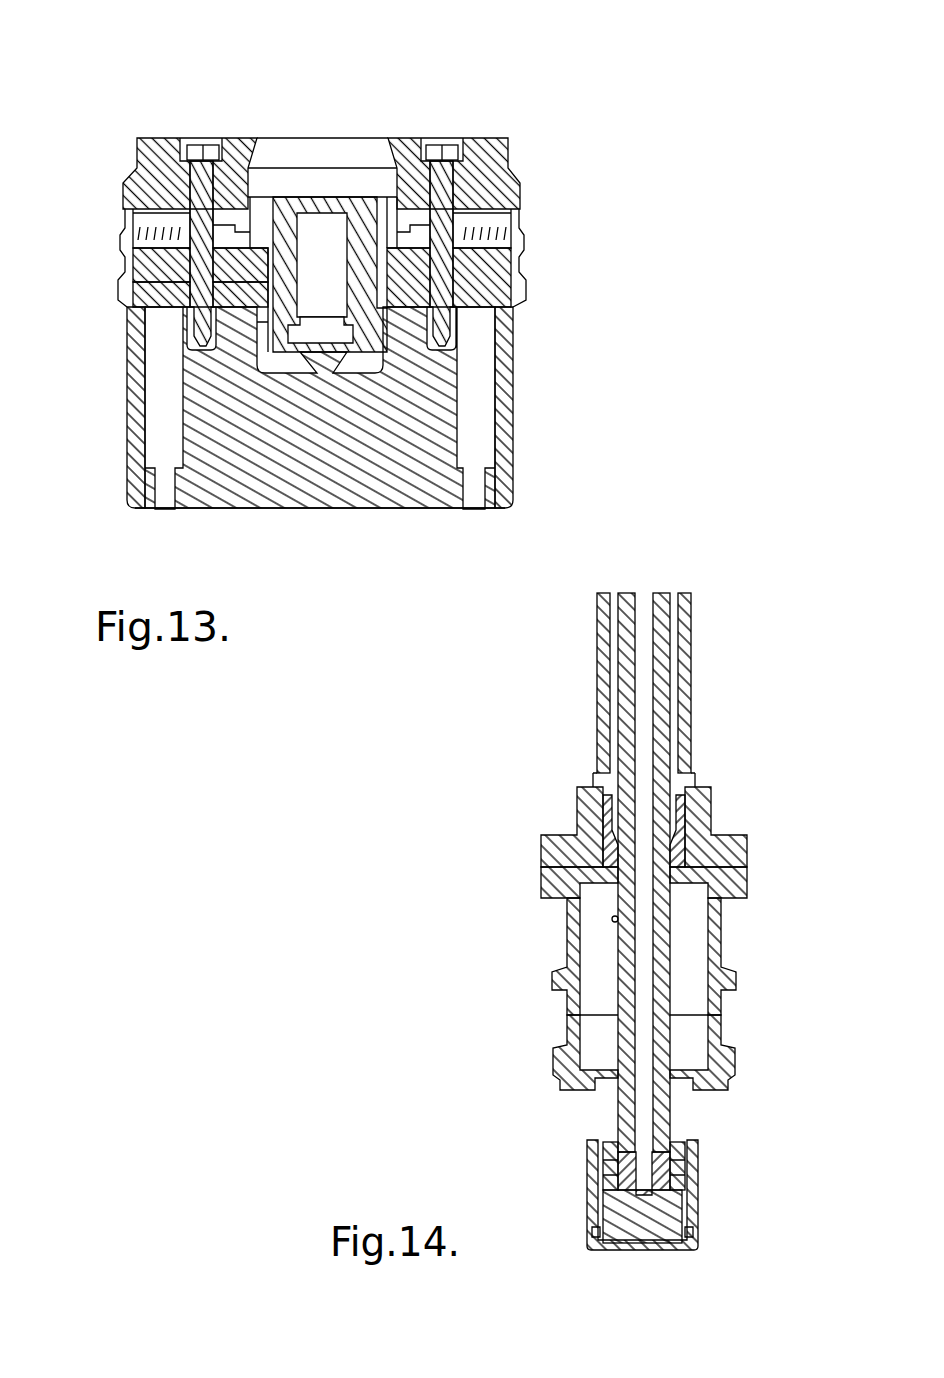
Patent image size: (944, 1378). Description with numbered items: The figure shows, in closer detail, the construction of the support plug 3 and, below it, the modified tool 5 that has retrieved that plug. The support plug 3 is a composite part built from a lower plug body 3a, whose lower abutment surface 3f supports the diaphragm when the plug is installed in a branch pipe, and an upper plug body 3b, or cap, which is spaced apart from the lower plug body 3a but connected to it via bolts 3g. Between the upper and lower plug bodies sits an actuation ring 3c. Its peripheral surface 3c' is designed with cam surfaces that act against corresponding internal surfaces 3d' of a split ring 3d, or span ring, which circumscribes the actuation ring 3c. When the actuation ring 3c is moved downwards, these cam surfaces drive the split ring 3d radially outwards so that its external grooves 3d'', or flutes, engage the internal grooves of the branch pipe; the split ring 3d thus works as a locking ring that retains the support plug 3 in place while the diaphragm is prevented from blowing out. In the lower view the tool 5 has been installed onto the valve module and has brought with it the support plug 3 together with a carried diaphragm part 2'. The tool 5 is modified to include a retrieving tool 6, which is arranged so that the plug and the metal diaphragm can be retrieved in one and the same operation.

In FIG. 13, the support plug 3 is at (607, 127).
In FIG. 14, the support plug 3 is at (673, 1213).
In FIG. 13, the lower plug body 3a is at (507, 427).
In FIG. 13, the upper plug body 3b is at (517, 183).
In FIG. 13, the actuation ring 3c is at (153, 243).
In FIG. 13, the peripheral surface 3c' is at (513, 243).
In FIG. 13, the split ring 3d is at (160, 281).
In FIG. 13, the internal surface 3d' is at (171, 324).
In FIG. 13, the external grooves 3d'' is at (90, 229).
In FIG. 13, the lower abutment surface 3f is at (400, 510).
In FIG. 13, the bolts 3g is at (208, 181).
In FIG. 14, the tool 5 is at (762, 606).
In FIG. 14, the retrieving tool 6 is at (660, 1100).
In FIG. 14, the carried diaphragm part 2' is at (677, 1210).